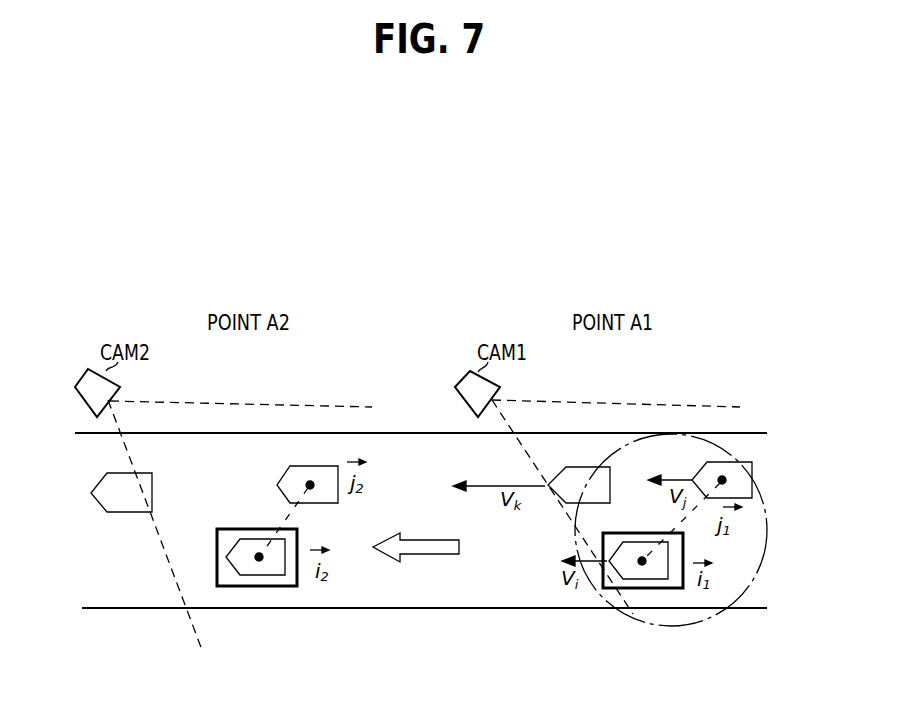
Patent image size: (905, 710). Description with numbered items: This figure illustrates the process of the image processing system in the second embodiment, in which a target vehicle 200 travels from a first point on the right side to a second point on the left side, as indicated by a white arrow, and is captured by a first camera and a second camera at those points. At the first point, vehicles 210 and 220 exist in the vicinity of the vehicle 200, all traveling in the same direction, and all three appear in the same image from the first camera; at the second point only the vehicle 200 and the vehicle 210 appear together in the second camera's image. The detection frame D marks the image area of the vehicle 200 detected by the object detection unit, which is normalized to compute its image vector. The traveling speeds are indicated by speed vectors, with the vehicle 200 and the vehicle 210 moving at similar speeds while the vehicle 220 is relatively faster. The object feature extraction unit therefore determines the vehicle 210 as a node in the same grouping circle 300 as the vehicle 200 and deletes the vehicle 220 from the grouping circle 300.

The vehicle 200 is at (273, 578).
The vehicle 210 is at (289, 466).
The vehicle 220 is at (144, 472).
The grouping circle 300 is at (592, 588).
The detection frame D is at (230, 529).